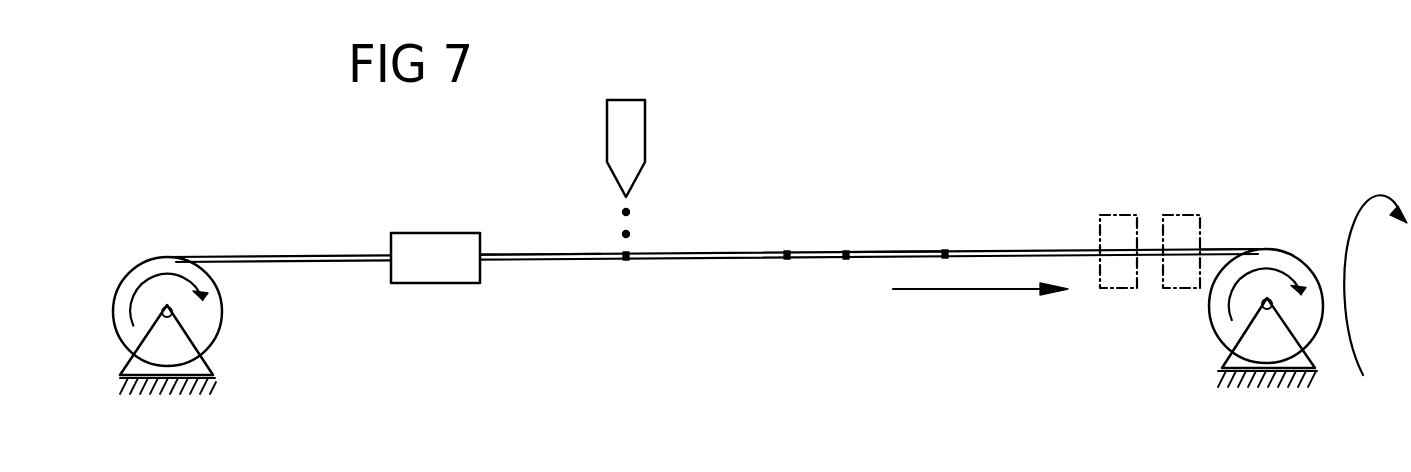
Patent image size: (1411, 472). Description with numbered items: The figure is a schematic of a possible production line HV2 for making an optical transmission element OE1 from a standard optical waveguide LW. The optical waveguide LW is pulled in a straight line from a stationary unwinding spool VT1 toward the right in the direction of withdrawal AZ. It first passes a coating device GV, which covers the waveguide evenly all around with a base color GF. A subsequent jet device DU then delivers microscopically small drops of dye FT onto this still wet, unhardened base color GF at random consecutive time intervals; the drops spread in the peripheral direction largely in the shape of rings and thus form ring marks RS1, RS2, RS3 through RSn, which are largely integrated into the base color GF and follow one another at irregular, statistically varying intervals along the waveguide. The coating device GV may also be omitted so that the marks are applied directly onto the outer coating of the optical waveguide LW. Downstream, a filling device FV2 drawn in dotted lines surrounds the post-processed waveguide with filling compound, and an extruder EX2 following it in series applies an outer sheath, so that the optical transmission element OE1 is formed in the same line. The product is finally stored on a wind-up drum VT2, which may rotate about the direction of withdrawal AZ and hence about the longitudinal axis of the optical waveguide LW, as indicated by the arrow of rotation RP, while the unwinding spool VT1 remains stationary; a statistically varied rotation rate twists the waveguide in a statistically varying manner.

The optical waveguide LW is at (297, 256).
The unwinding spool VT1 is at (222, 346).
The coating device GV is at (437, 241).
The base color GF is at (531, 254).
The jet device DU is at (633, 125).
The drops of dye FT is at (630, 234).
The ring mark RS1 is at (626, 262).
The ring mark RS2 is at (787, 261).
The ring mark RS3 is at (846, 261).
The ring mark RSn is at (946, 251).
The direction of withdrawal AZ is at (966, 292).
The production line HV2 is at (823, 127).
The filling device FV2 is at (1118, 216).
The extruder EX2 is at (1183, 216).
The optical transmission element OE1 is at (1218, 248).
The wind-up drum VT2 is at (1222, 322).
The arrow of rotation RP is at (1362, 203).